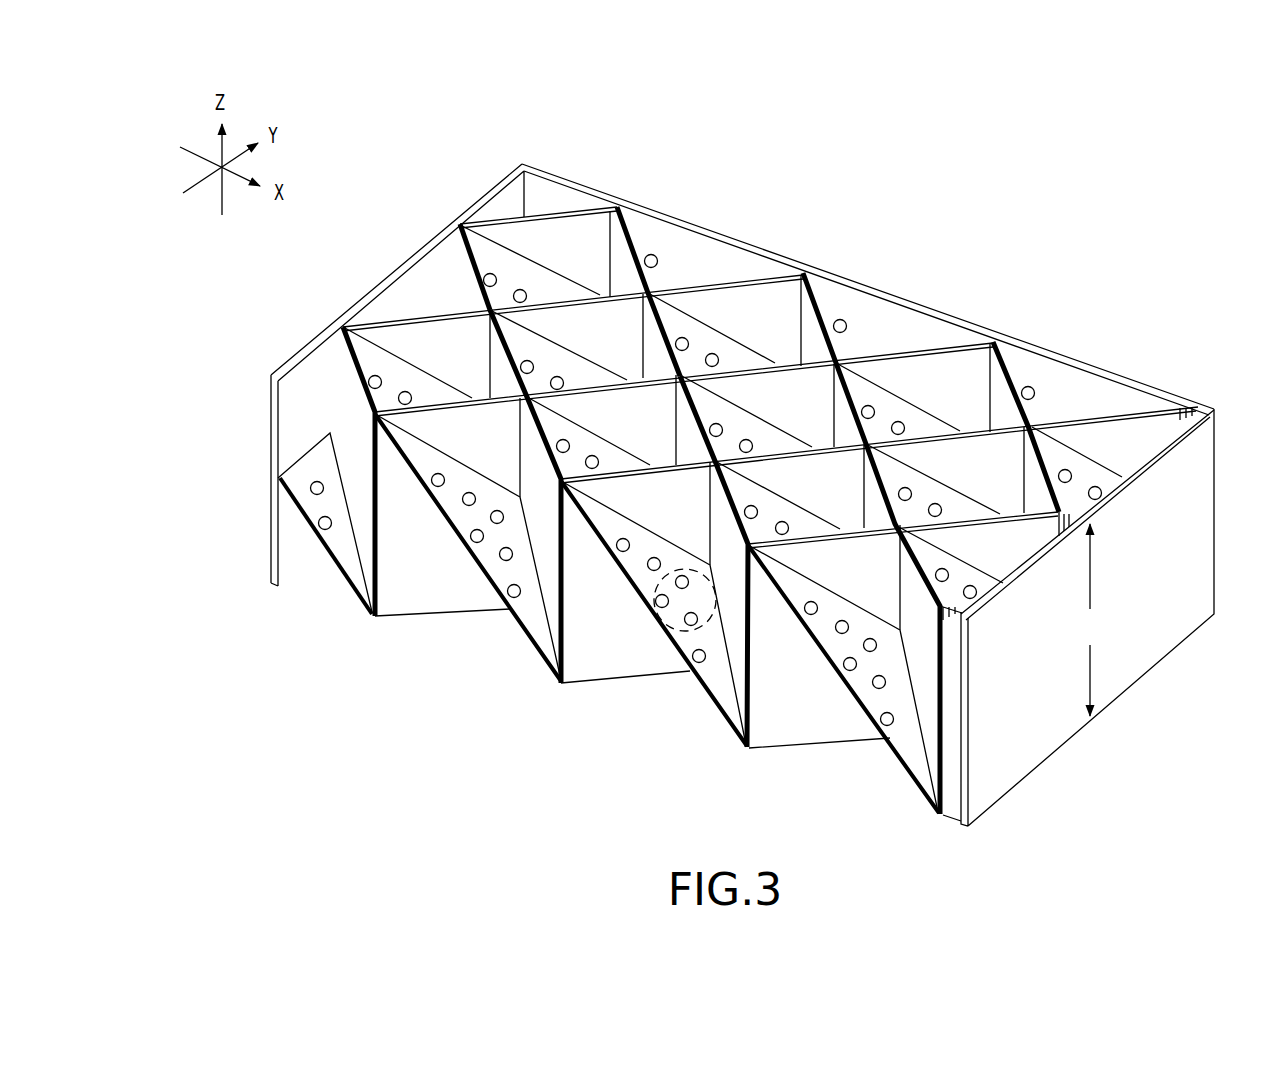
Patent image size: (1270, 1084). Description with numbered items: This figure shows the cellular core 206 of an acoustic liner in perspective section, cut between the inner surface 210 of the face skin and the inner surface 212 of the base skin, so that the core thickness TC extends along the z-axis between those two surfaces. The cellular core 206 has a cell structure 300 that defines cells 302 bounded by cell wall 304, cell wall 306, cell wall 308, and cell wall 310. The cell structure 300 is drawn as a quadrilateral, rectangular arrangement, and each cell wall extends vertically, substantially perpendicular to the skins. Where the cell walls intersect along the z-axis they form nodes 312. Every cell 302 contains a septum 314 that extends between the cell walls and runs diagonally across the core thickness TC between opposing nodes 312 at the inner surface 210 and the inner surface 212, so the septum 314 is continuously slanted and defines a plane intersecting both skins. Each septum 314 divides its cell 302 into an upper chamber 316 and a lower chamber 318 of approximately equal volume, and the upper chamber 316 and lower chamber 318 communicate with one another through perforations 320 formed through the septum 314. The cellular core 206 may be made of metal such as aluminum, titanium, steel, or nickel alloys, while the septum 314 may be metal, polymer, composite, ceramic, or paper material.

The cellular core 206 is at (747, 485).
The inner surface 210 is at (1087, 515).
The inner surface 212 is at (1087, 617).
The cell structure 300 is at (738, 462).
The cells 302 is at (538, 201).
The cell wall 304 is at (531, 260).
The cell wall 306 is at (558, 345).
The cell wall 308 is at (633, 244).
The cell wall 310 is at (460, 242).
The nodes 312 is at (767, 484).
The septum 314 is at (892, 398).
The upper chamber 316 is at (463, 452).
The lower chamber 318 is at (443, 624).
The perforations 320 is at (682, 644).